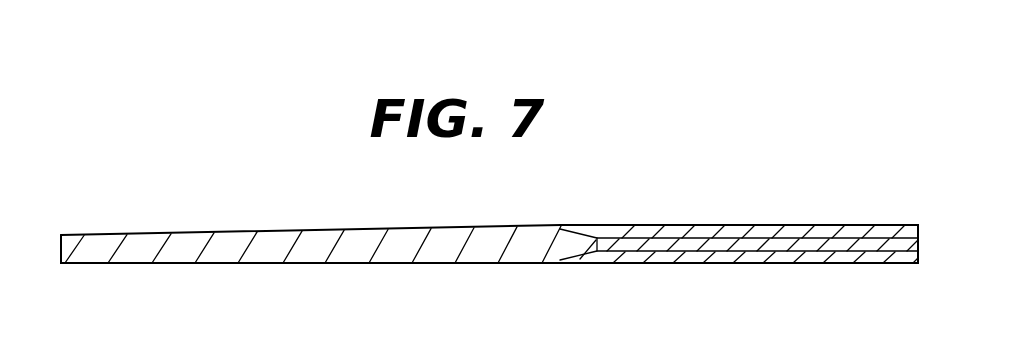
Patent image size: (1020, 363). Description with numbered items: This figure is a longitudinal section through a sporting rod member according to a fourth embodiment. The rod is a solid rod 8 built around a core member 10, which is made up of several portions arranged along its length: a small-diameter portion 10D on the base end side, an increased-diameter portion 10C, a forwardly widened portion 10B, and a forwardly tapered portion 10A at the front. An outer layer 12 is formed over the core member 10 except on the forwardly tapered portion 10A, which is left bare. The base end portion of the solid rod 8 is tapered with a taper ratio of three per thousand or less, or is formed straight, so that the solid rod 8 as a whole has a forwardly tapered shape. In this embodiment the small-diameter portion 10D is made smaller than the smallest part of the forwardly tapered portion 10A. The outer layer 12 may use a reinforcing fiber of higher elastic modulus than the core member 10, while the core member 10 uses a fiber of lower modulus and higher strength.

The solid rod 8 is at (757, 239).
The core member 10 is at (360, 263).
The forwardly tapered portion 10A is at (267, 263).
The forwardly widened portion 10B is at (517, 263).
The increased-diameter portion 10C is at (585, 264).
The small-diameter portion 10D is at (705, 264).
The outer layer 12 is at (775, 264).